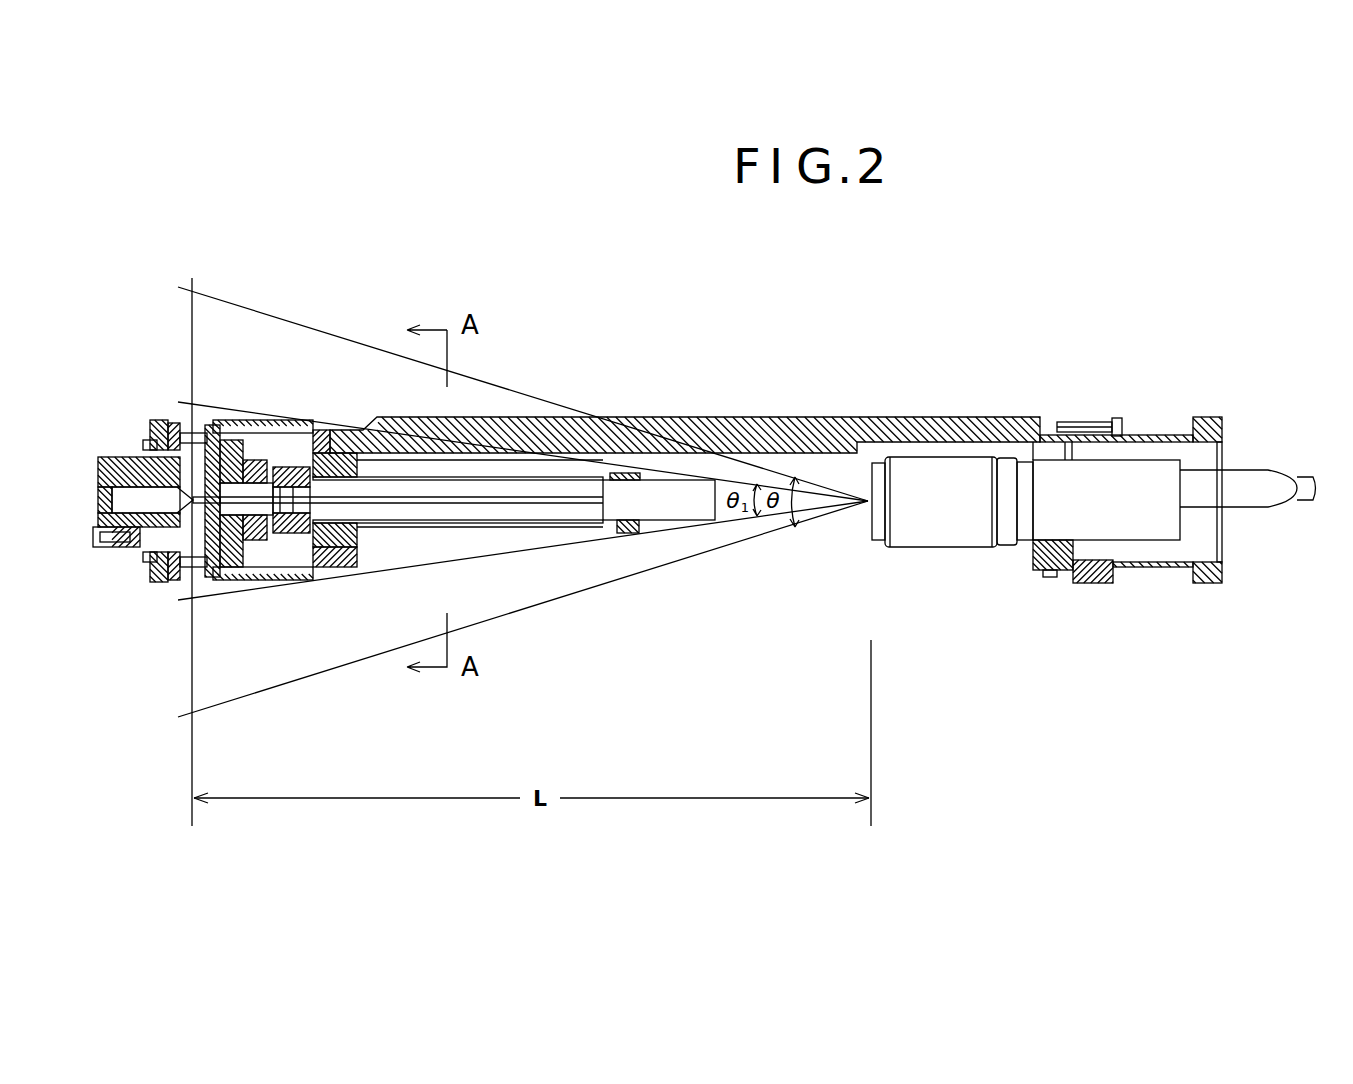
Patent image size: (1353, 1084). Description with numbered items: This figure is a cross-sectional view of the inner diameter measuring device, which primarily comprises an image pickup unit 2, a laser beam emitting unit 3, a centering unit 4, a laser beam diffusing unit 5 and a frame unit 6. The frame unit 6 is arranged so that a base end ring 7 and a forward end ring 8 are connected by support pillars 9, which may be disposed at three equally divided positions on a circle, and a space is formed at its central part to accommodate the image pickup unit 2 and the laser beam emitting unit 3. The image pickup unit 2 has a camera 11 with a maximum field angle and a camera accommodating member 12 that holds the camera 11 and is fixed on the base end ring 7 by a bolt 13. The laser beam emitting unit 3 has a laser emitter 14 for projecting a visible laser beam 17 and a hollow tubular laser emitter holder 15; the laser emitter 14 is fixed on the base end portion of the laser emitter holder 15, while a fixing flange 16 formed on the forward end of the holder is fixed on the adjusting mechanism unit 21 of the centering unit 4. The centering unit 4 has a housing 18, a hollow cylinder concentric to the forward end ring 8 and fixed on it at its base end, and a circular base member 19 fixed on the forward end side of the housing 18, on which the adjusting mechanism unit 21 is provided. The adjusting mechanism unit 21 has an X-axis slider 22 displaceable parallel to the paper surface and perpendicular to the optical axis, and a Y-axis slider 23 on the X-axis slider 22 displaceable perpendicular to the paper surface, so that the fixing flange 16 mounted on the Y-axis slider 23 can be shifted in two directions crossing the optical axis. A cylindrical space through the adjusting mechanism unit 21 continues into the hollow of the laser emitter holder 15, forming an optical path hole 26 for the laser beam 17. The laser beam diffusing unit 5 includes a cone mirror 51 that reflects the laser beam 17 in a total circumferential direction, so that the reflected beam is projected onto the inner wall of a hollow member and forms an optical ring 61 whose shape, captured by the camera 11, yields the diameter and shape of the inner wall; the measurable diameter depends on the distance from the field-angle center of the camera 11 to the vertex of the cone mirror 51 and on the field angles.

The image pickup unit 2 is at (1159, 427).
The laser beam emitting unit 3 is at (554, 465).
The centering unit 4 is at (288, 467).
The laser beam diffusing unit 5 is at (149, 446).
The frame unit 6 is at (939, 408).
The base end ring 7 is at (1074, 583).
The forward end ring 8 is at (345, 570).
The support pillars 9 is at (795, 416).
The camera 11 is at (947, 548).
The camera accommodating member 12 is at (1153, 566).
The bolt 13 is at (1118, 417).
The laser emitter 14 is at (657, 521).
The laser emitter holder 15 is at (450, 524).
The fixing flange 16 is at (323, 468).
The laser beam 17 is at (477, 497).
The housing 18 is at (295, 581).
The base member 19 is at (192, 528).
The adjusting mechanism unit 21 is at (261, 441).
The X-axis slider 22 is at (268, 546).
The Y-axis slider 23 is at (291, 412).
The optical path hole 26 is at (270, 462).
The cone mirror 51 is at (147, 543).
The optical ring 61 is at (192, 690).